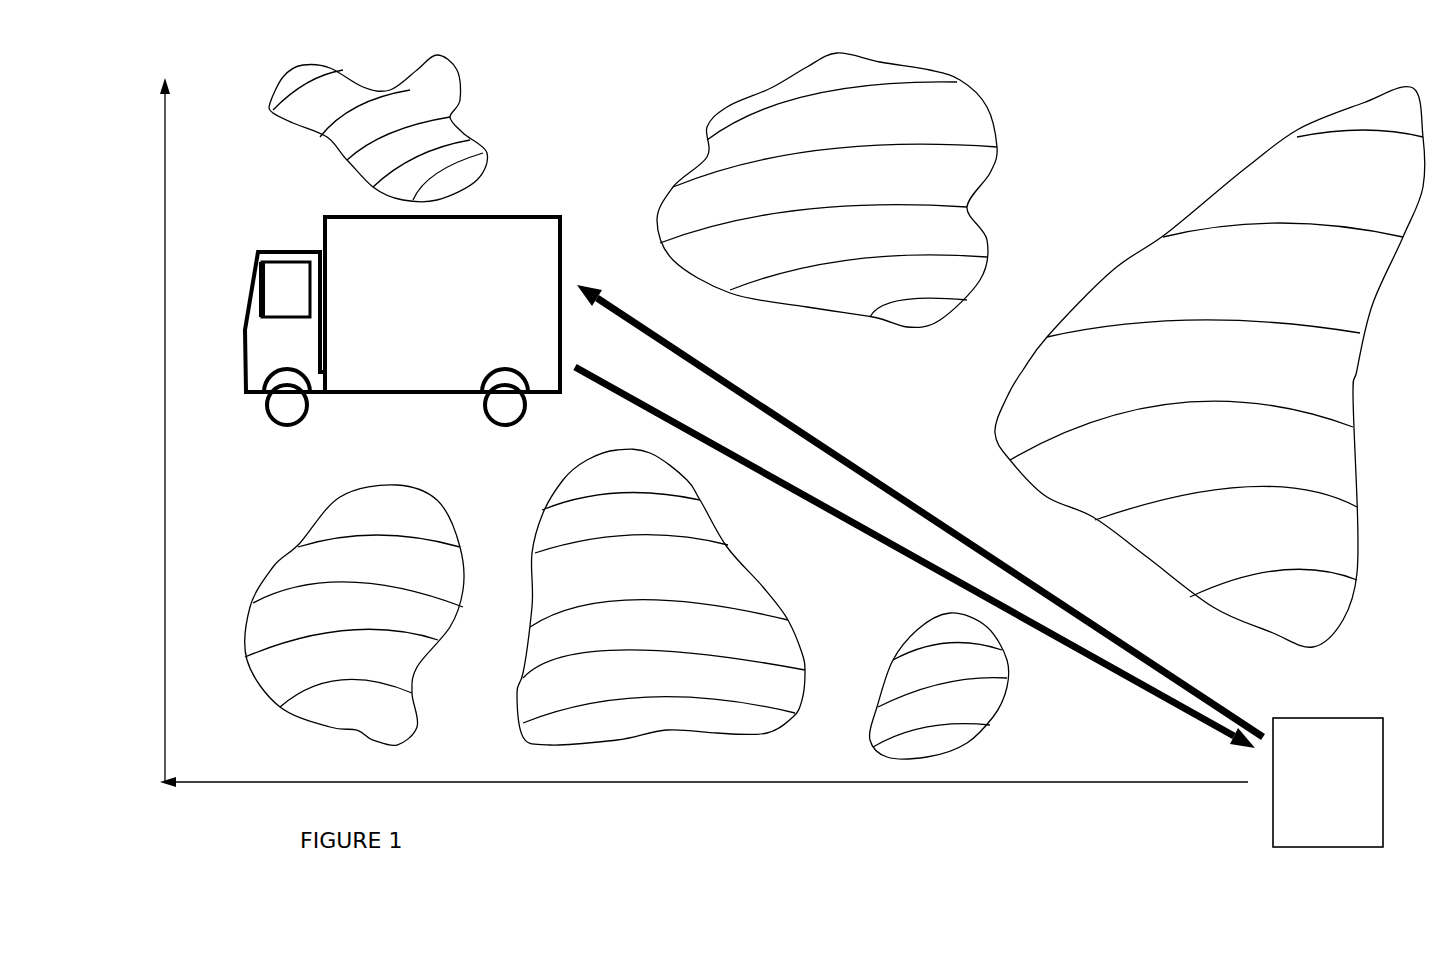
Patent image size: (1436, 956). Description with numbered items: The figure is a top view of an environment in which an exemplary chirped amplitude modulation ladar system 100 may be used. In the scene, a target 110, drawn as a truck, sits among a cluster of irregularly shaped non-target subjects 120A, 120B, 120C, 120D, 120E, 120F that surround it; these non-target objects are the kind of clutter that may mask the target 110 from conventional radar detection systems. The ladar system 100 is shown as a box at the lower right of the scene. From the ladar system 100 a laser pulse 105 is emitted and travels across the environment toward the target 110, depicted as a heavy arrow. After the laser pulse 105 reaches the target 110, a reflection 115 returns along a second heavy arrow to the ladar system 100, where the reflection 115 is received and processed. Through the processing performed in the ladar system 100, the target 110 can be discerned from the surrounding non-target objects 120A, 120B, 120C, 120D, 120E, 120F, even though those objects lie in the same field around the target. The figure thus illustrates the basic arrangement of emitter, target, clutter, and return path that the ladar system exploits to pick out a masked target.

The chirped amplitude modulation ladar system 100 is at (1328, 782).
The laser pulse 105 is at (833, 443).
The target 110 is at (521, 258).
The reflection 115 is at (1112, 682).
The non-target subject 120A is at (460, 140).
The non-target subject 120B is at (988, 133).
The non-target subject 120C is at (1257, 177).
The non-target subject 120D is at (992, 703).
The non-target subject 120E is at (718, 595).
The non-target subject 120F is at (430, 530).